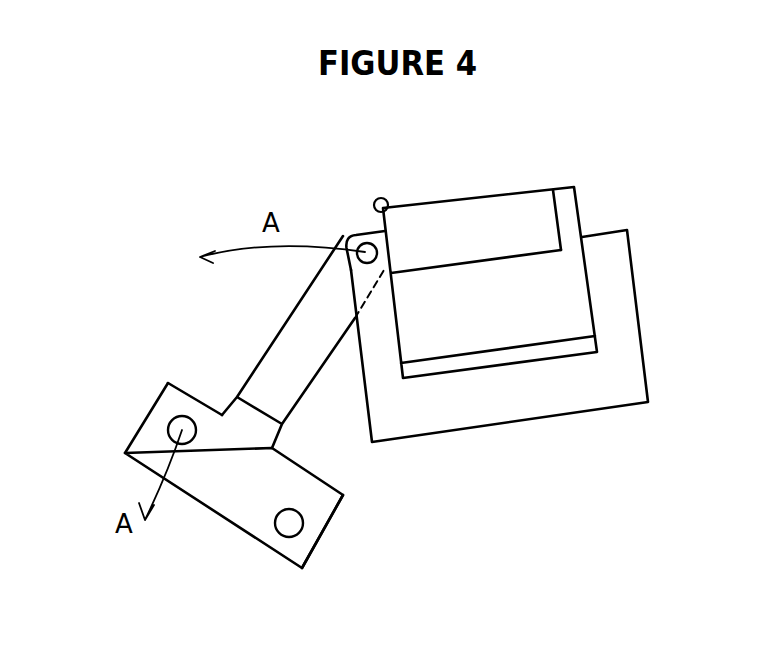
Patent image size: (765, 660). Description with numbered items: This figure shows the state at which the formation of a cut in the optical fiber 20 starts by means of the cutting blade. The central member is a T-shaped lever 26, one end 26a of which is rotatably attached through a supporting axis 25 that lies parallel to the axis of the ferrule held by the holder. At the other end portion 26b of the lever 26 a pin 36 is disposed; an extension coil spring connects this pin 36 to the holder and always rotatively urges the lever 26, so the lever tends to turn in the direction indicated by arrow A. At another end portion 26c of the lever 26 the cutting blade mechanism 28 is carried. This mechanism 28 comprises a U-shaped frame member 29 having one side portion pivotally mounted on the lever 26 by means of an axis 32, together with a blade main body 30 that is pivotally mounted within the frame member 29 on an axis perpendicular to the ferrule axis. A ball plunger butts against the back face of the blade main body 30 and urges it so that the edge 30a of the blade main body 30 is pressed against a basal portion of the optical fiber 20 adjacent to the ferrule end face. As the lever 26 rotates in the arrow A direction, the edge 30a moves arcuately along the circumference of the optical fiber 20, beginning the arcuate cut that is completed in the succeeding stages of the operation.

The optical fiber 20 is at (381, 198).
The supporting axis 25 is at (294, 528).
The T-shaped lever 26 is at (218, 493).
The one end of the lever 26a is at (334, 516).
The other end portion of the lever 26b is at (143, 419).
The another end portion of the lever 26c is at (347, 233).
The cutting blade mechanism 28 is at (582, 482).
The U-shaped frame member 29 is at (485, 410).
The blade main body 30 is at (523, 322).
The edge of the blade main body 30a is at (505, 192).
The axis 32 is at (370, 252).
The pin 36 is at (179, 428).